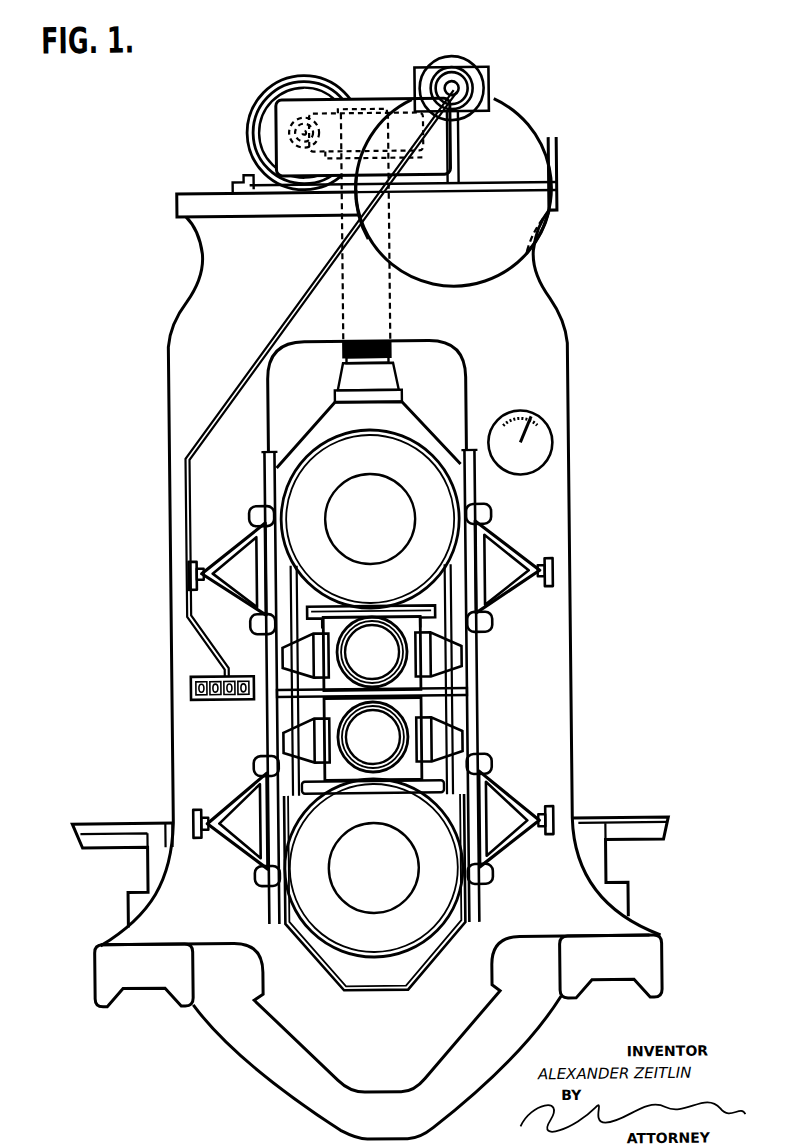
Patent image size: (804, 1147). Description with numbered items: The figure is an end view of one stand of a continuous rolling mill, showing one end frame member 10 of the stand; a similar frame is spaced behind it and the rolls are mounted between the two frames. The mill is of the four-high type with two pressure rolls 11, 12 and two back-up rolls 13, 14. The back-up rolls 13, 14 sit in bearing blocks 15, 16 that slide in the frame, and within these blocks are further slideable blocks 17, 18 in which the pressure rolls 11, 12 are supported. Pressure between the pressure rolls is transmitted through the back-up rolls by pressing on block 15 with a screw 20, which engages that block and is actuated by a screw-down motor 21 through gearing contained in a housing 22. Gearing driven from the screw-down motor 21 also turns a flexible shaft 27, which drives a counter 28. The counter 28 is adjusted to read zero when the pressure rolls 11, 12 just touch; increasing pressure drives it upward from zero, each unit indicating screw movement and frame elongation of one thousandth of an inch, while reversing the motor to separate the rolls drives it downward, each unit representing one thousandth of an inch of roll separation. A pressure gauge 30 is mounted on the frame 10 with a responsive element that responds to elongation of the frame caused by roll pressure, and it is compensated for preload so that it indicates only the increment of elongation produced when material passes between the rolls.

The end frame member 10 is at (572, 722).
The pressure roll 11 is at (372, 653).
The pressure roll 12 is at (373, 737).
The back-up roll 13 is at (370, 519).
The back-up roll 14 is at (374, 868).
The bearing block 15 is at (441, 676).
The bearing block 16 is at (441, 764).
The block 17 is at (400, 622).
The block 18 is at (366, 776).
The screw 20 is at (394, 352).
The screw-down motor 21 is at (252, 105).
The housing 22 is at (394, 83).
The flexible shaft 27 is at (186, 500).
The counter 28 is at (190, 697).
The pressure gauge 30 is at (540, 446).